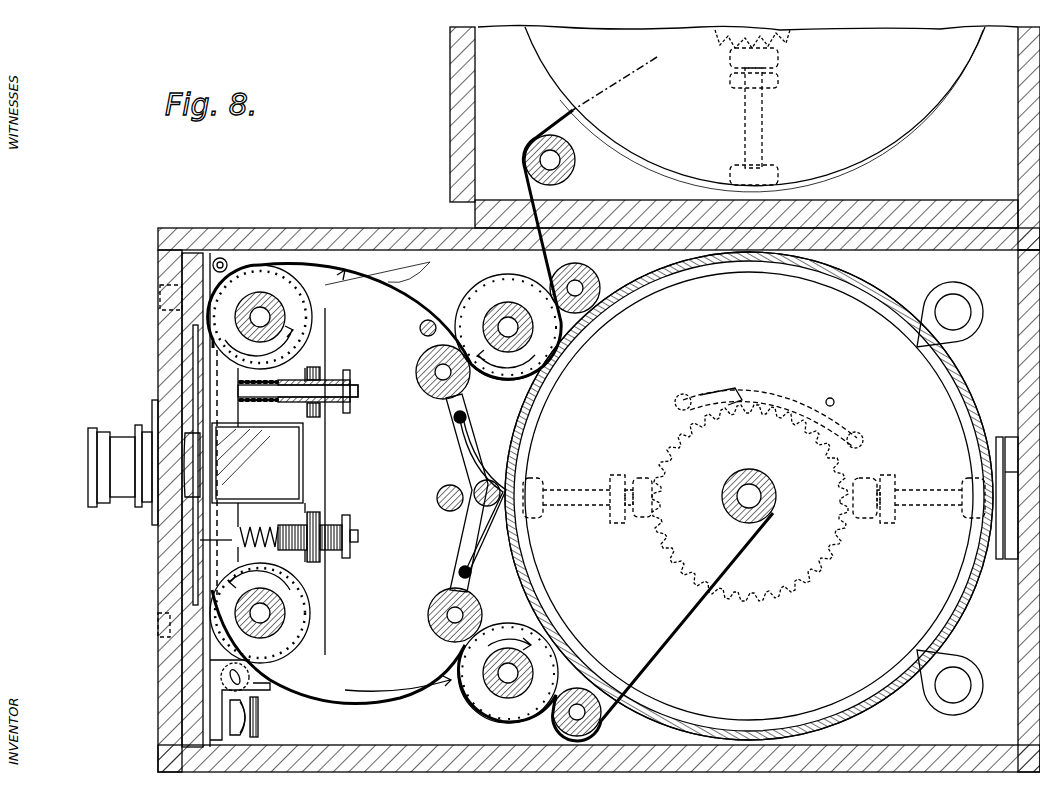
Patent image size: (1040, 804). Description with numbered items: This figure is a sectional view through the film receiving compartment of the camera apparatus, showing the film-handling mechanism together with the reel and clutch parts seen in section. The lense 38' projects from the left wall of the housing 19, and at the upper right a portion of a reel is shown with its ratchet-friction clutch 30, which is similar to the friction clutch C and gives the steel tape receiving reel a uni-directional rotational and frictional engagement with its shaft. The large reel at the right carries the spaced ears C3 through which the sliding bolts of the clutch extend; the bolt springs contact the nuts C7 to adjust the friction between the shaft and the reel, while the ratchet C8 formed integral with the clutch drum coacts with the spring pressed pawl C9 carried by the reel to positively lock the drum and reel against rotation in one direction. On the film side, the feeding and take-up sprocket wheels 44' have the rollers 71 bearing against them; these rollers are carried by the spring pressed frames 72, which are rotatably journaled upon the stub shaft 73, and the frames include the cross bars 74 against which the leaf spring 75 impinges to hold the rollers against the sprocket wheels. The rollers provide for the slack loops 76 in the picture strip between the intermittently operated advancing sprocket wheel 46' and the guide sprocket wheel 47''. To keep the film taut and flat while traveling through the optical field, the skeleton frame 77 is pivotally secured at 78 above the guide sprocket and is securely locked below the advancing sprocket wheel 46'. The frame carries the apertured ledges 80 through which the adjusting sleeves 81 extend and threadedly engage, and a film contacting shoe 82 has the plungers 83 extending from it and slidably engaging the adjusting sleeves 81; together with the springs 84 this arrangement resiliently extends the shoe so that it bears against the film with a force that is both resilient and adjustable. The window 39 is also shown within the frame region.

The ratchet-friction clutch 30 is at (790, 30).
The pivot 78 is at (222, 260).
The guide sprocket wheel 47'' is at (289, 317).
The intermittently operated advancing sprocket wheel 46' is at (292, 613).
The feeding and take-up sprocket wheels 44' is at (494, 504).
The slack loops 76 is at (405, 300).
The apertured ledges 80 is at (318, 368).
The adjusting sleeves 81 is at (335, 382).
The plungers 83 is at (352, 390).
The springs 84 is at (272, 405).
The skeleton frame 77 is at (312, 452).
The window frame 39 is at (300, 474).
The film contacting shoe 82 is at (200, 540).
The housing 19 is at (258, 718).
The lense 38' is at (109, 457).
The rollers 71 is at (432, 385).
The spring pressed frames 72 is at (470, 533).
The stub shaft 73 is at (478, 490).
The cross bars 74 is at (466, 418).
The leaf spring 75 is at (480, 553).
The spaced ears C3 is at (545, 480).
The nuts C7 is at (624, 525).
The ratchet C8 is at (812, 576).
The spring pressed pawl C9 is at (769, 418).